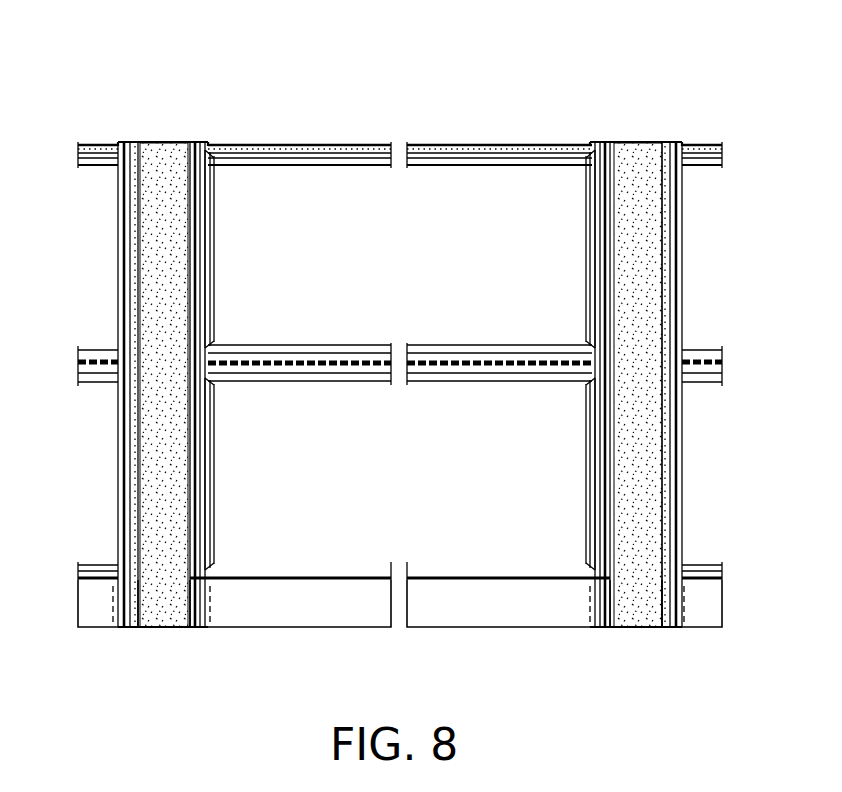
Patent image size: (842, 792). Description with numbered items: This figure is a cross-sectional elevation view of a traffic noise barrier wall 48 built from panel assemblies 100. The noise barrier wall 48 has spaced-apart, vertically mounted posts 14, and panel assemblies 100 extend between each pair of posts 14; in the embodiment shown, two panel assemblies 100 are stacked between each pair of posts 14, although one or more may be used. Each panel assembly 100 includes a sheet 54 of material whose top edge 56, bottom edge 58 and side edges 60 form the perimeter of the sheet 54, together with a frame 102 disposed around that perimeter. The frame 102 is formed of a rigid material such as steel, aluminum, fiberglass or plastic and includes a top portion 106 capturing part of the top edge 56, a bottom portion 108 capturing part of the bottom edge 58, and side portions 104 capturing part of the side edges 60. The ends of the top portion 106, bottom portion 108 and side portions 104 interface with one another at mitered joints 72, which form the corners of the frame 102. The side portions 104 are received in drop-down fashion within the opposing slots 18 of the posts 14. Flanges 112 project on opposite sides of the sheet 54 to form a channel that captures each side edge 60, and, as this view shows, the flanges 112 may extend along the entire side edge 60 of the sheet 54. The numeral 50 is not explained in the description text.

The traffic noise barrier wall 48 is at (478, 45).
The post 14 is at (157, 143).
The slot 18 is at (137, 144).
The panel assembly 100 is at (95, 145).
The frame 102 is at (262, 150).
The sheet 54 is at (346, 178).
The top portion 106 is at (312, 160).
The header beam 50 is at (497, 148).
The top edge 56 is at (463, 152).
The bottom edge 58 is at (325, 355).
The bottom portion 108 is at (420, 350).
The side portion 104 is at (208, 235).
The side edge 60 is at (205, 275).
The flange 112 is at (205, 308).
The mitered joint 72 is at (215, 170).